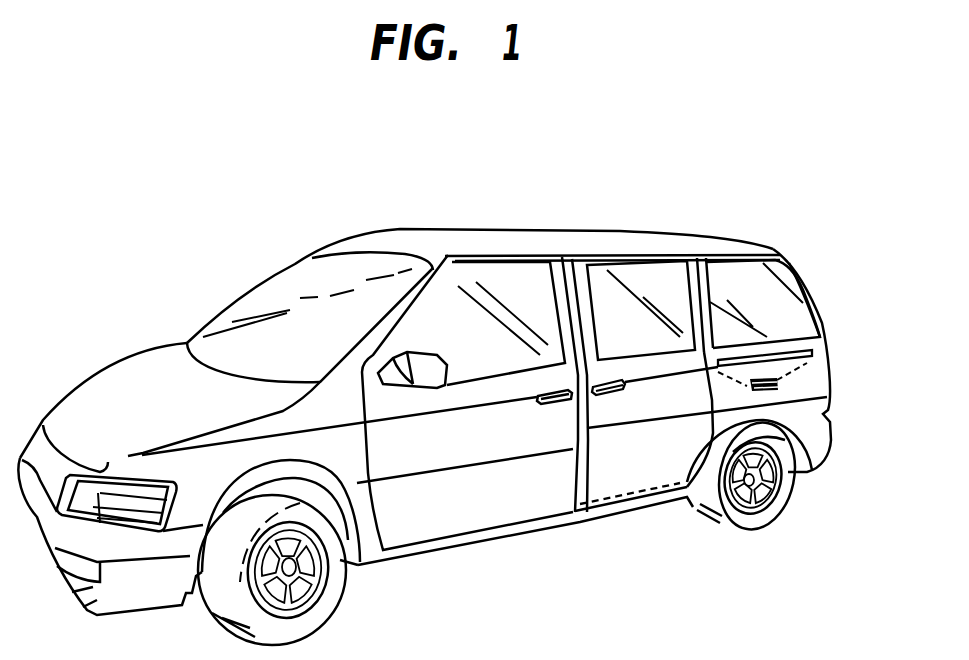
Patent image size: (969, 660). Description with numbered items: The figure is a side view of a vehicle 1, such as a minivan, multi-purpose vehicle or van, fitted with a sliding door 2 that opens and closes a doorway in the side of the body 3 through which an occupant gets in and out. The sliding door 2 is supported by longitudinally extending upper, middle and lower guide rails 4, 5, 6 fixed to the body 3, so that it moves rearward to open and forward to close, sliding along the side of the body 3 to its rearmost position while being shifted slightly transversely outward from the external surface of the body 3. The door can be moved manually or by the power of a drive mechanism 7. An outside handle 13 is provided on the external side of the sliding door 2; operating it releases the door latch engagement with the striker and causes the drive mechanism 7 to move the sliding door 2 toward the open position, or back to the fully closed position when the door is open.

The vehicle 1 is at (452, 217).
The sliding door 2 is at (563, 281).
The body 3 is at (829, 362).
The upper guide rail 4 is at (641, 255).
The middle guide rail 5 is at (820, 336).
The lower guide rail 6 is at (620, 500).
The drive mechanism 7 is at (779, 386).
The outside handle 13 is at (606, 394).